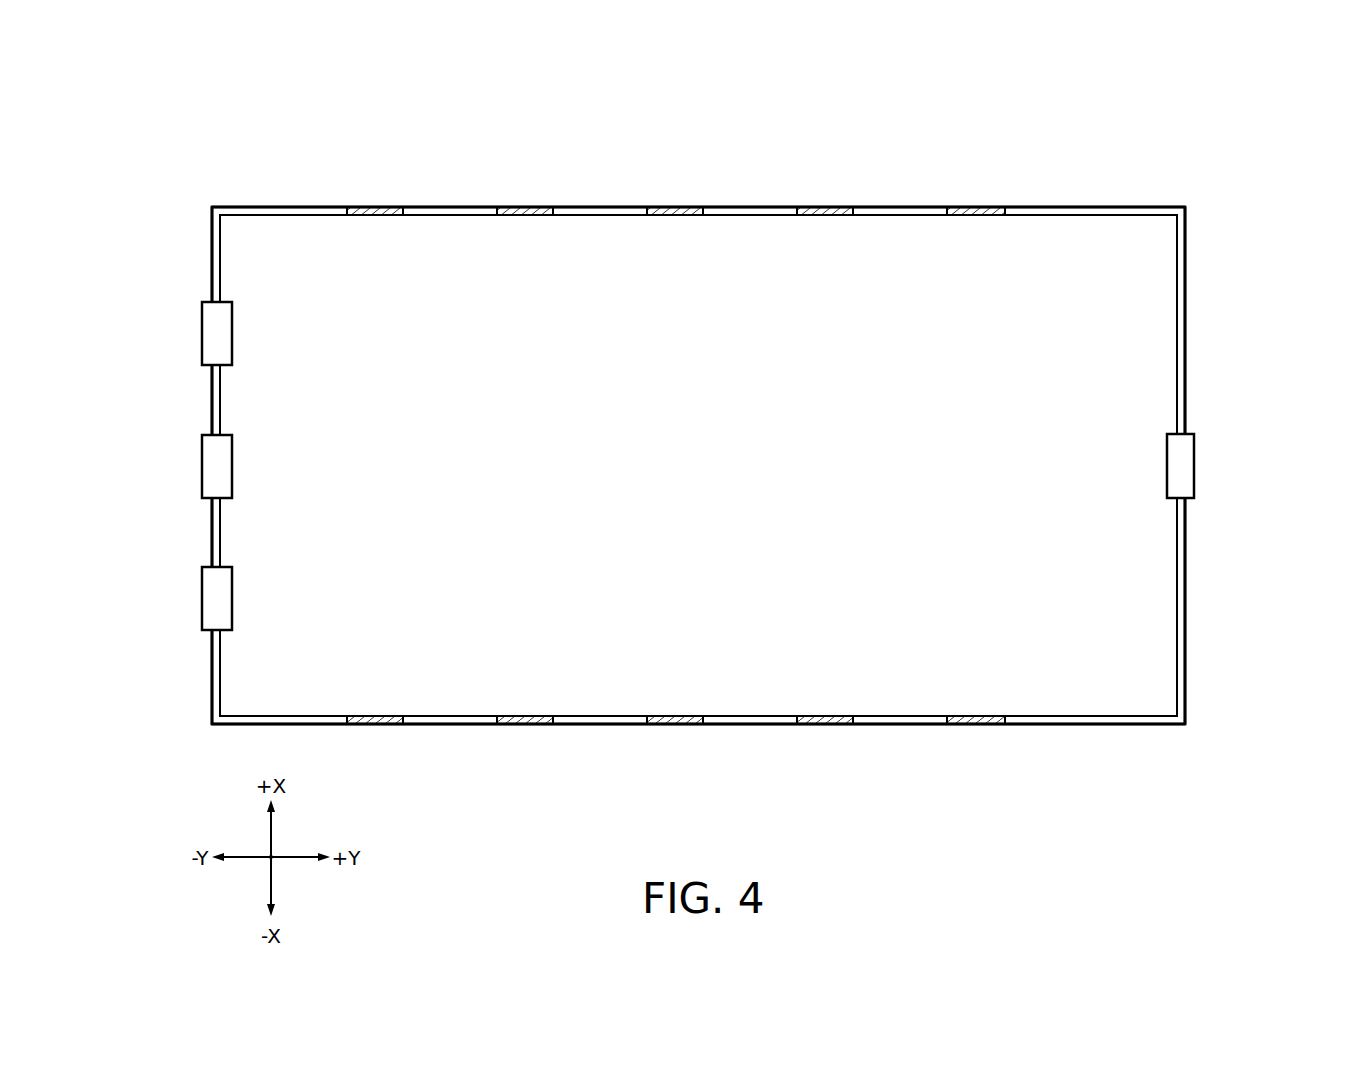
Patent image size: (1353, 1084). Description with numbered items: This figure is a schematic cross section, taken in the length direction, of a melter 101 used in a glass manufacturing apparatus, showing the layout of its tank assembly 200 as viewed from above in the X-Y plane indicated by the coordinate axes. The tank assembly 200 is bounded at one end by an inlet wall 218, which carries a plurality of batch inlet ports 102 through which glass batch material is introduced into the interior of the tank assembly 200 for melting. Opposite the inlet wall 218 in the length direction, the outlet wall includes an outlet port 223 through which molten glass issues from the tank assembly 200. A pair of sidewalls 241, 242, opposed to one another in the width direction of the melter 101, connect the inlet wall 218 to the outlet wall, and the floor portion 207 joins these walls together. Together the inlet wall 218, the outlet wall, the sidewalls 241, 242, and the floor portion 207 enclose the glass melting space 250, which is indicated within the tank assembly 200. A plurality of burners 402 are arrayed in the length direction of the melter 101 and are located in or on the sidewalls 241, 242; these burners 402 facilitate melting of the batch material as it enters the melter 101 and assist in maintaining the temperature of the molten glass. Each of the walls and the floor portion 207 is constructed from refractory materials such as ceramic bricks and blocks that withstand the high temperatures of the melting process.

The melter 101 is at (730, 390).
The tank assembly 200 is at (674, 400).
The floor portion 207 is at (723, 480).
The inlet wall 218 is at (212, 250).
The sidewall 241 is at (1090, 207).
The sidewall 242 is at (1088, 724).
The burners 402 is at (679, 468).
The batch inlet ports 102 is at (202, 335).
The outlet port 223 is at (1194, 470).
The glass melting space 250 is at (1193, 326).